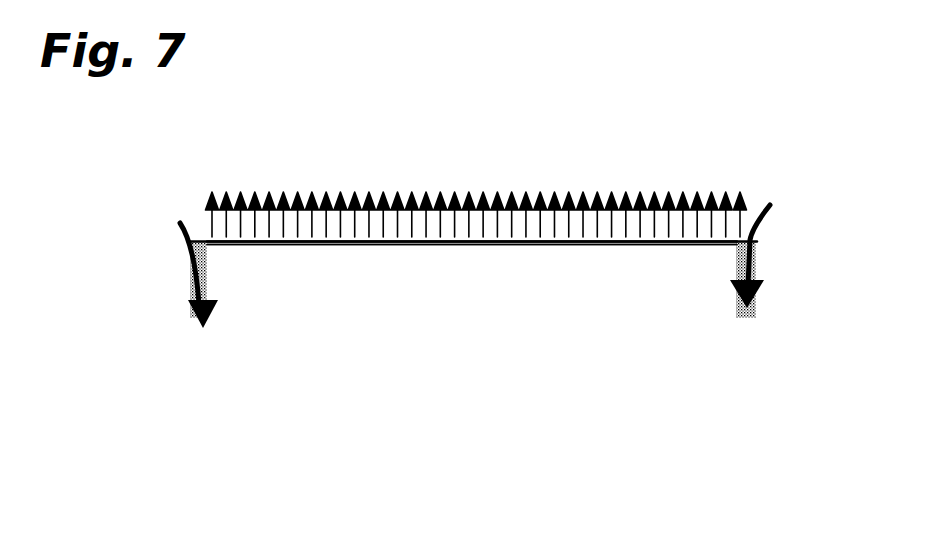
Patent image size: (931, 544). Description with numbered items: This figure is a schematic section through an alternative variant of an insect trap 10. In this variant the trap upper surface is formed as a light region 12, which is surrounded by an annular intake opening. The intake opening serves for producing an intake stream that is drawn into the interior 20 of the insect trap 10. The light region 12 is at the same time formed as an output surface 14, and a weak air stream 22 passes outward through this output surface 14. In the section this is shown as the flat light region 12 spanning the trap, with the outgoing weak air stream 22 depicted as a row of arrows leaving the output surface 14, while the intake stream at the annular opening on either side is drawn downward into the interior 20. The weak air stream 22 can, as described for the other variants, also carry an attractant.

The insect trap 10 is at (458, 294).
The light region 12 is at (555, 245).
The output surface 14 is at (472, 285).
The interior 20 is at (498, 322).
The weak air stream 22 is at (739, 218).